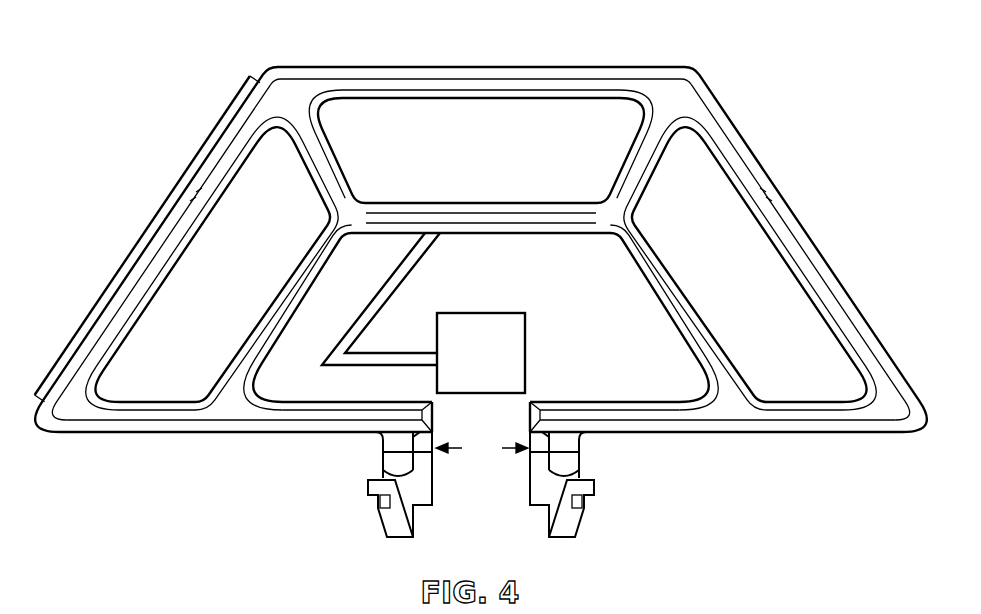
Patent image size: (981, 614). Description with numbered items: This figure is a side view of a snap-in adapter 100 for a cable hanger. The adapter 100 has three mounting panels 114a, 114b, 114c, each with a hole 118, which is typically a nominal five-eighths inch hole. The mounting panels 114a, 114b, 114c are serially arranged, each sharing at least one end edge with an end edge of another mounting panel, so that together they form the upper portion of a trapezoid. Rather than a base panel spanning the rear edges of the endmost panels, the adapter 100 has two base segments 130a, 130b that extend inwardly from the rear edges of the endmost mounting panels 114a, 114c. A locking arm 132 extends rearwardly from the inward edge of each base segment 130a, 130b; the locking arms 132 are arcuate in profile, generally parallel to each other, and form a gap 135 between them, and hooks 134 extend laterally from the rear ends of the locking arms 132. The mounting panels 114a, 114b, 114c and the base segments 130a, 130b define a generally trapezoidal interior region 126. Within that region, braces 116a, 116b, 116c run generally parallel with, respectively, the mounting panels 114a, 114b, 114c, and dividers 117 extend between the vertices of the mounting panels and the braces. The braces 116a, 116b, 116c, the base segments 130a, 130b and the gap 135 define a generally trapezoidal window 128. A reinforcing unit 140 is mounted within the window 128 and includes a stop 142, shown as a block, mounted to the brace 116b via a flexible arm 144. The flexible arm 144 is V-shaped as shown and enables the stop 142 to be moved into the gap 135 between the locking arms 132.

The snap-in adapter 100 is at (897, 256).
The mounting panel 114a is at (100, 345).
The mounting panel 114b is at (600, 90).
The mounting panel 114c is at (855, 345).
The brace 116a is at (292, 300).
The brace 116b is at (404, 220).
The brace 116c is at (654, 246).
The divider 117 is at (318, 172).
The hole 118 is at (519, 63).
The interior region 126 is at (162, 358).
The window 128 is at (290, 380).
The base segment 130a is at (172, 420).
The base segment 130b is at (782, 425).
The locking arm 132 is at (420, 462).
The hook 134 is at (373, 483).
The gap 135 is at (482, 449).
The reinforcing unit 140 is at (522, 299).
The stop 142 is at (518, 358).
The flexible arm 144 is at (394, 284).